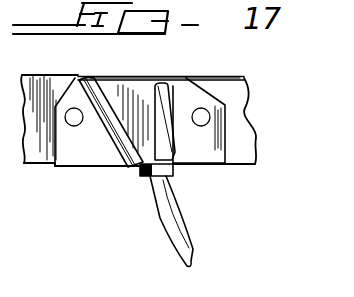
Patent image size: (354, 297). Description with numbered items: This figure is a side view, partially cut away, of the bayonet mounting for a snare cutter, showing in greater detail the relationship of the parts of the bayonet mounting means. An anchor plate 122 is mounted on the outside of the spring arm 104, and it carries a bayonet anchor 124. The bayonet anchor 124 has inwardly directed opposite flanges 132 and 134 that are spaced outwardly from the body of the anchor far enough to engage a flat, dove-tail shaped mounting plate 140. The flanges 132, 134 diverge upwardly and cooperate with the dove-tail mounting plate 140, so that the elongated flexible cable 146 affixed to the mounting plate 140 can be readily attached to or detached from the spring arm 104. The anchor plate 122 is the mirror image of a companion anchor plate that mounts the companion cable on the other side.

The spring arm 104 is at (247, 152).
The anchor plate 122 is at (195, 164).
The bayonet anchor 124 is at (207, 115).
The flange 132 is at (123, 160).
The flange 134 is at (178, 77).
The mounting plate 140 is at (148, 176).
The cable 146 is at (193, 247).